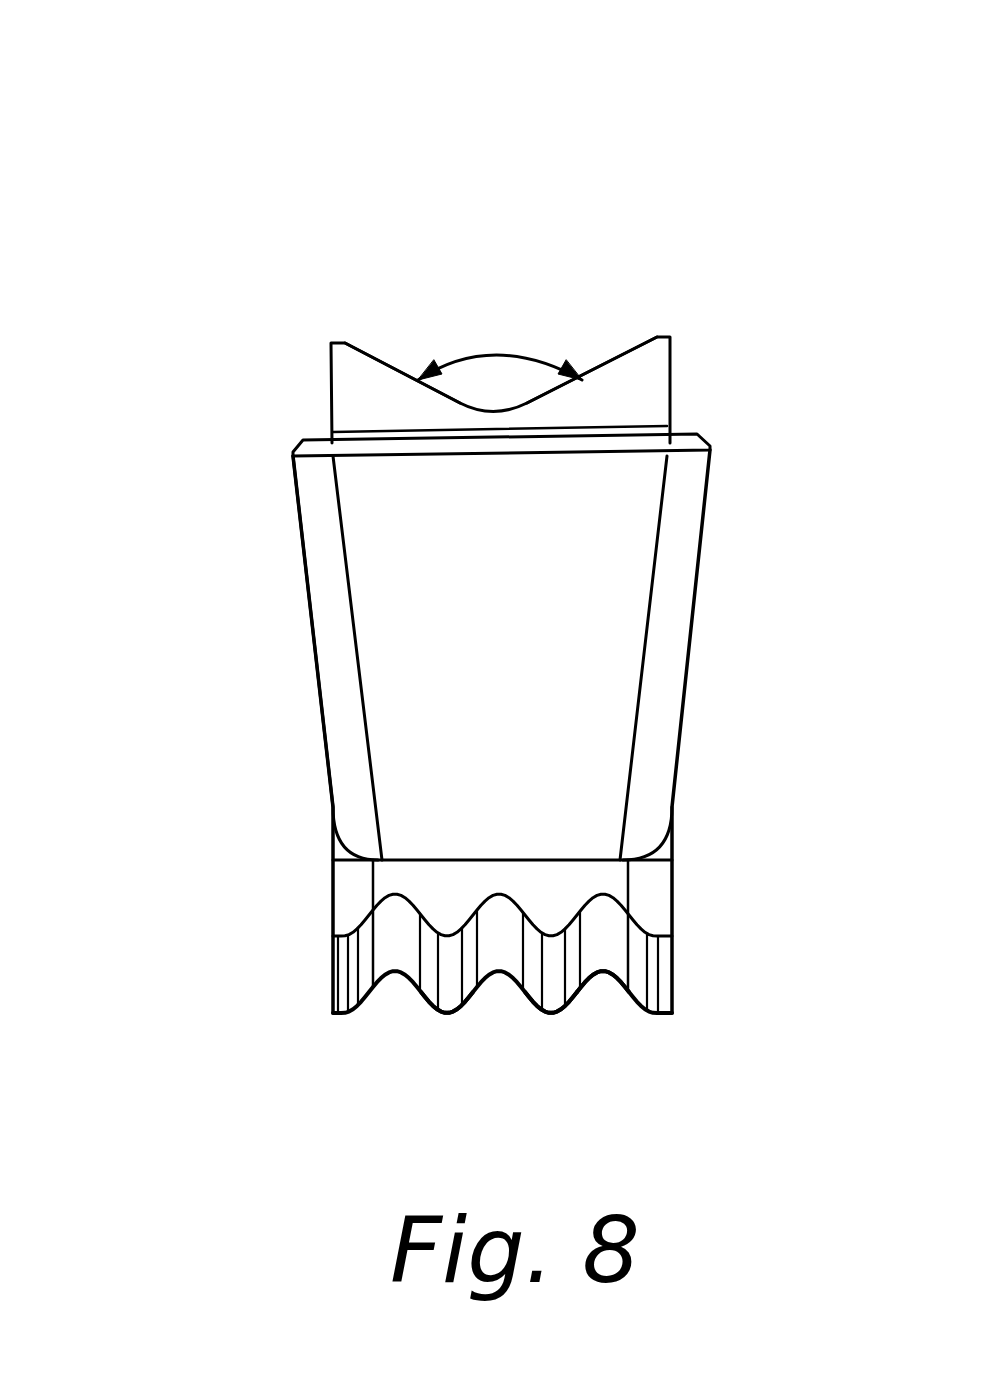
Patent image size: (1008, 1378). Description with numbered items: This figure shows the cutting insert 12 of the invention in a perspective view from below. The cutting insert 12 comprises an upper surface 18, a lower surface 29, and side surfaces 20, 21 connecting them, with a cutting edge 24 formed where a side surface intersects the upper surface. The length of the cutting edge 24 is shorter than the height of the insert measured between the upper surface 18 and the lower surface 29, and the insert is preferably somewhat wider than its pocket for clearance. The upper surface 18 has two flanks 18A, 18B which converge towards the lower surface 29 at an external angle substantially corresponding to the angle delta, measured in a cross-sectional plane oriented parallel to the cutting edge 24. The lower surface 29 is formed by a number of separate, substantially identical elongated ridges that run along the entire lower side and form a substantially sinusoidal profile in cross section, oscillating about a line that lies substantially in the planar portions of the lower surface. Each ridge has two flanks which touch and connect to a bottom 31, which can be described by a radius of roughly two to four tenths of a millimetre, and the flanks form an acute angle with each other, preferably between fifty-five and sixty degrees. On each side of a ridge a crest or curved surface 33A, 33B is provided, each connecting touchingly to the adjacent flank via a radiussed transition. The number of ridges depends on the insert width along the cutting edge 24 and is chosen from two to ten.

The cutting insert 12 is at (232, 405).
The upper surface 18 is at (488, 232).
The flank 18A is at (373, 355).
The flank 18B is at (620, 353).
The cutting edge 24 is at (630, 443).
The side surface 21 is at (313, 632).
The side surface 20 is at (690, 638).
The lower surface 29 is at (350, 1056).
The crest or curved surface 33A is at (448, 995).
The crest or curved surface 33B is at (555, 988).
The bottom 31 is at (605, 950).